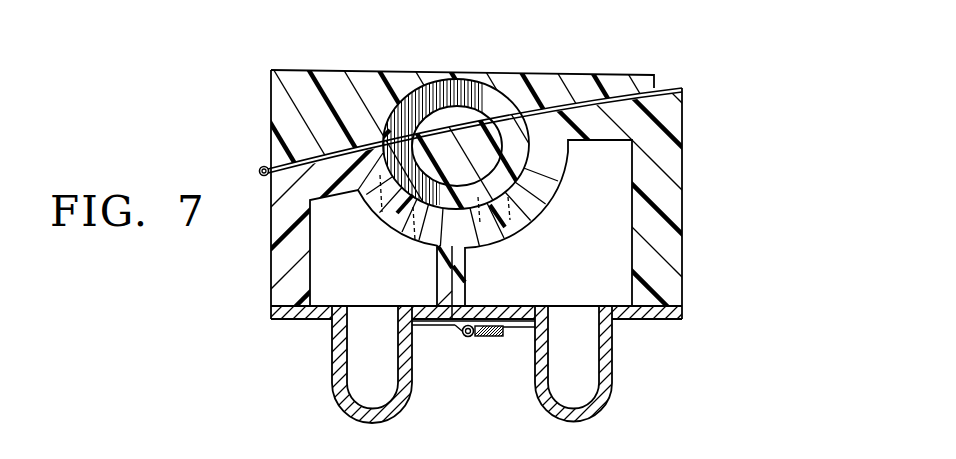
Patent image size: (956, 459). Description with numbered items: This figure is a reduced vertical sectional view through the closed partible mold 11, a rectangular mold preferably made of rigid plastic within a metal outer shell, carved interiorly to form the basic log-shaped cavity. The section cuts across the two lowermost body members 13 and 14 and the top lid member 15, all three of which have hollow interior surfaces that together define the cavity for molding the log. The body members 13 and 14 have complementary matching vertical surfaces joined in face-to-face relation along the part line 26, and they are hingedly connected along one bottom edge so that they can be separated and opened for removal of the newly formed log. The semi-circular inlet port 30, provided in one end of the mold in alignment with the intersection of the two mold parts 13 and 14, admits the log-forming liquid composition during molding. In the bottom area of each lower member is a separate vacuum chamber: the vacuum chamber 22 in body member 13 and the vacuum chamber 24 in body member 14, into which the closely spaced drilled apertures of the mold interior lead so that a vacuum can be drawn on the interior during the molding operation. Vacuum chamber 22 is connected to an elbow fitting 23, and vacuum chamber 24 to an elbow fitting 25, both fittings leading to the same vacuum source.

The partible mold 11 is at (693, 91).
The lowermost body member 13 is at (270, 233).
The lowermost body member 14 is at (683, 207).
The top lid member 15 is at (573, 75).
The vacuum chamber 22 is at (370, 284).
The elbow fitting 23 is at (392, 415).
The vacuum chamber 24 is at (548, 223).
The elbow fitting 25 is at (598, 415).
The part line 26 is at (468, 253).
The inlet port 30 is at (472, 122).